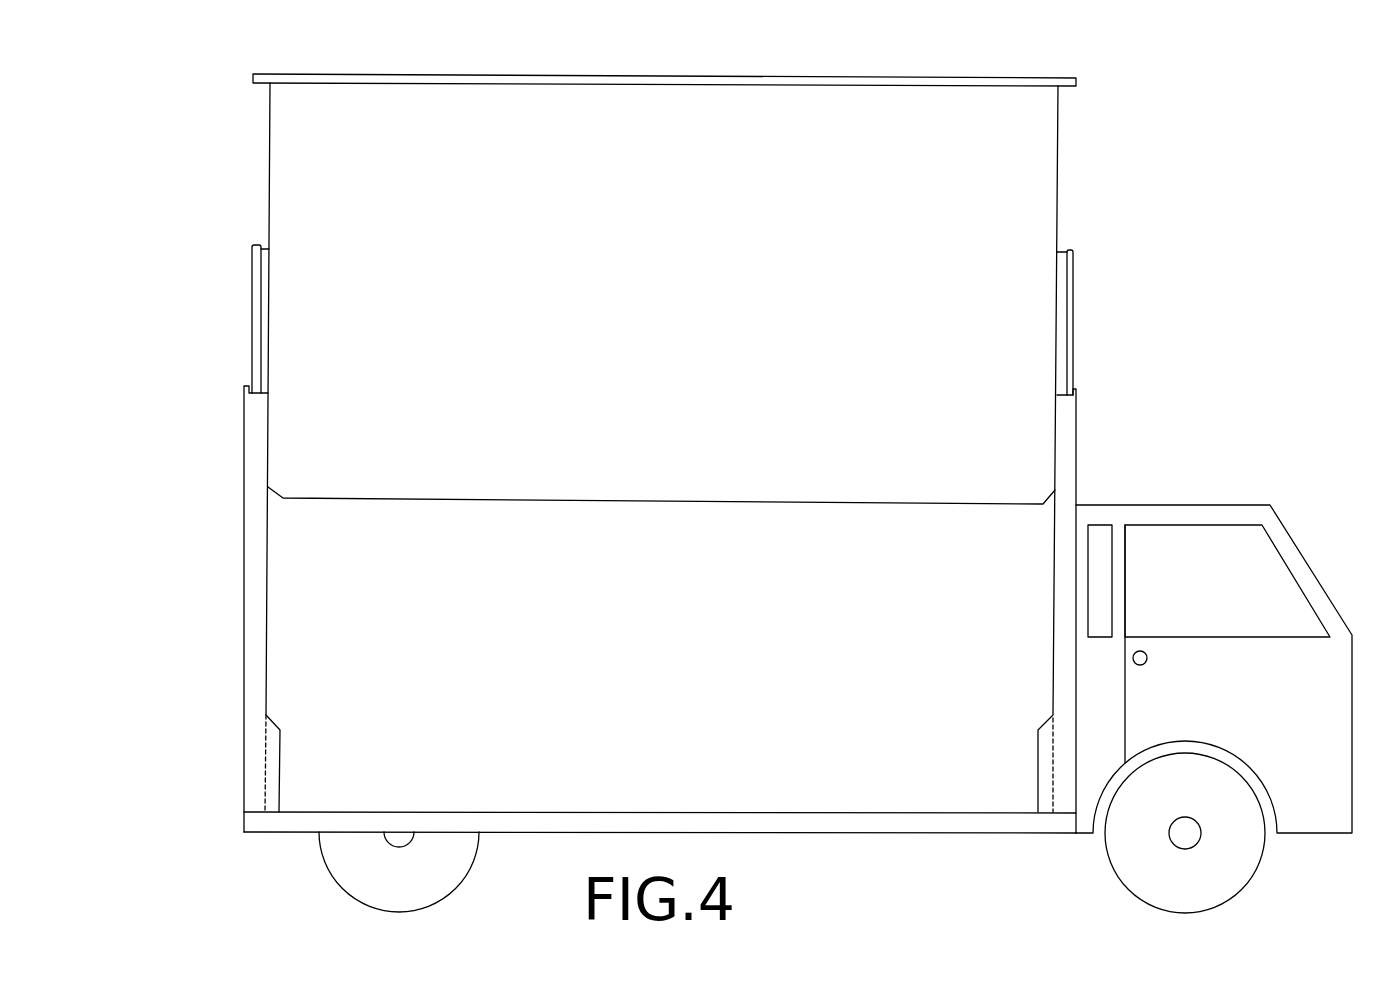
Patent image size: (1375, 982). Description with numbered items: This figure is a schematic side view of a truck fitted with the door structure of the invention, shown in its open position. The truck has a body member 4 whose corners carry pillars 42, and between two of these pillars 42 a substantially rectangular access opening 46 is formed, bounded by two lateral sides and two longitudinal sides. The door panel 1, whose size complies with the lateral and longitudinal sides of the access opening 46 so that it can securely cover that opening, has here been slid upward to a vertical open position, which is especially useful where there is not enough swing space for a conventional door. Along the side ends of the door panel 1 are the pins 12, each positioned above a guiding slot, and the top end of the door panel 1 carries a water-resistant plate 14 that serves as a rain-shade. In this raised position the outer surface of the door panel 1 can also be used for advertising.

The door panel 1 is at (1007, 150).
The water-resistant plate 14 is at (256, 78).
The pin 12 is at (258, 247).
The pillar 42 is at (246, 548).
The body member 4 is at (1082, 448).
The access opening 46 is at (638, 678).